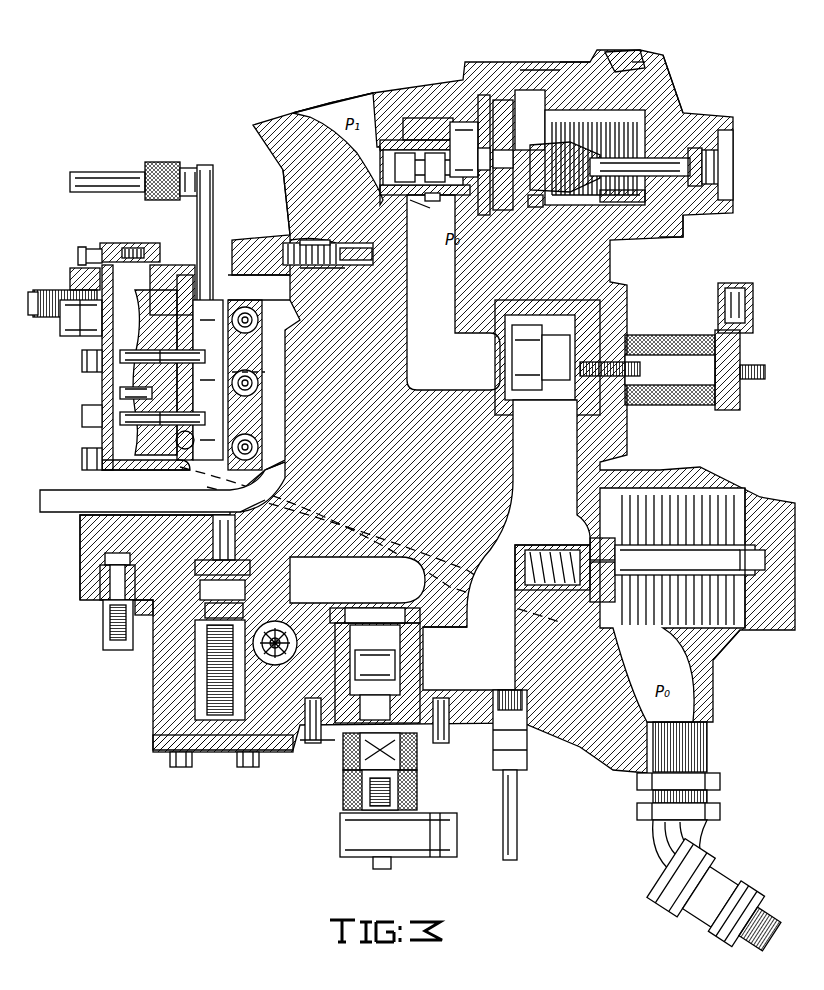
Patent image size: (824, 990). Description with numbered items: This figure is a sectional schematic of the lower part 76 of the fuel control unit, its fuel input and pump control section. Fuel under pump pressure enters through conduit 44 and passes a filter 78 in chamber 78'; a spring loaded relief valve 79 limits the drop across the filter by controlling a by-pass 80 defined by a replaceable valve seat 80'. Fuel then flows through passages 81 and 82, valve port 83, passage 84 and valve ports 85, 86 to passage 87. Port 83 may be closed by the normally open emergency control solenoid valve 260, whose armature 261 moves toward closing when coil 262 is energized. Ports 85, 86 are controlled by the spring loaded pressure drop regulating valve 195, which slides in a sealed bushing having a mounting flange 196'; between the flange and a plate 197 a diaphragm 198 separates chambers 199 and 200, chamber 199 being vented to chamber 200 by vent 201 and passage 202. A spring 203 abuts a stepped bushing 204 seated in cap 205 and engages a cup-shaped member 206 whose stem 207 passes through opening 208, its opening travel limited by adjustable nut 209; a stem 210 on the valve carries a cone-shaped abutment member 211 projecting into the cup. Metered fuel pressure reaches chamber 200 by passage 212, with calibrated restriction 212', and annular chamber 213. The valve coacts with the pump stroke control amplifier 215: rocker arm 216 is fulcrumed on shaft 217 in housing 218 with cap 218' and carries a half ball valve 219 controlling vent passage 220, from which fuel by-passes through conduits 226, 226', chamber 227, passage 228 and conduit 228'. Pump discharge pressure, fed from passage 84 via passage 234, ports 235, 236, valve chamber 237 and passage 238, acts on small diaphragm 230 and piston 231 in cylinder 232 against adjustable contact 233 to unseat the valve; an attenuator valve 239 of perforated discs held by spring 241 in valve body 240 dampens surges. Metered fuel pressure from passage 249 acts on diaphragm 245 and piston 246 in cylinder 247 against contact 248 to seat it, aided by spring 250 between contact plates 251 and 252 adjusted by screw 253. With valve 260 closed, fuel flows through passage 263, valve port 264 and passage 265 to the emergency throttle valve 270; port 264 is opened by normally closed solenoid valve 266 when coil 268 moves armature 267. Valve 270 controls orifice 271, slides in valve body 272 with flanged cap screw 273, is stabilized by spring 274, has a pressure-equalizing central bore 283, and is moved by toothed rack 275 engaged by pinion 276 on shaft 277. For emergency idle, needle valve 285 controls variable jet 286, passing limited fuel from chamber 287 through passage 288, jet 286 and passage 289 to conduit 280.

The fuel line or conduit 44 is at (775, 922).
The lower part of the unit 76 is at (330, 755).
The filter 78 is at (768, 578).
The chamber 78' is at (745, 664).
The spring loaded relief valve 79 is at (545, 582).
The by-pass 80 is at (591, 578).
The removable and replaceable valve seat 80' is at (690, 572).
The passage 81 is at (590, 550).
The passage 82 is at (533, 512).
The valve port 83 is at (512, 390).
The passage 84 is at (447, 366).
The valve port 85 is at (410, 205).
The valve port 86 is at (430, 198).
The passage 87 is at (322, 115).
The pressure drop regulating valve 195 is at (438, 118).
The mounting flange 196' is at (512, 123).
The plate 197 is at (540, 68).
The diaphragm 198 is at (535, 145).
The chamber 199 is at (485, 95).
The chamber 200 is at (530, 92).
The vent 201 is at (465, 122).
The passage 202 is at (575, 62).
The spring 203 is at (630, 158).
The stepped bushing 204 is at (695, 148).
The cap or cover 205 is at (733, 170).
The cup-shaped member 206 is at (588, 137).
The stem 207 is at (615, 200).
The opening 208 is at (685, 228).
The adjustable nut 209 is at (720, 158).
The stem 210 is at (533, 205).
The cone-shaped abutment member 211 is at (575, 197).
The passage 212 is at (625, 51).
The calibrated bleed or restriction 212' is at (657, 46).
The annular chamber 213 is at (650, 98).
The pump stroke control device or amplifier 215 is at (98, 385).
The rocker arm 216 is at (120, 418).
The shaft 217 is at (122, 393).
The housing 218 is at (134, 492).
The cap or cover 218' is at (77, 455).
The half ball valve 219 is at (127, 248).
The vent passage 220 is at (155, 268).
The conduit 226 is at (136, 168).
The conduit 226' is at (179, 235).
The chamber 227 is at (122, 352).
The passage 228 is at (162, 488).
The conduit 228' is at (537, 775).
The small diaphragm 230 is at (252, 312).
The piston 231 is at (275, 300).
The cylinder 232 is at (258, 380).
The adjustable contact 233 is at (83, 357).
The passage 234 is at (345, 256).
The valve port 235 is at (372, 258).
The valve port 236 is at (300, 240).
The valve chamber 237 is at (290, 240).
The passage 238 is at (285, 290).
The attenuator valve 239 is at (330, 262).
The valve body 240 is at (284, 250).
The spring 241 is at (340, 270).
The small diaphragm 245 is at (258, 440).
The piston 246 is at (252, 447).
The cylinder 247 is at (250, 455).
The adjustable contact 248 is at (175, 435).
The passage 249 is at (283, 185).
The spring 250 is at (90, 256).
The contact plate 251 is at (65, 320).
The contact plate 252 is at (75, 278).
The screw 253 is at (45, 297).
The emergency control solenoid valve 260 is at (560, 415).
The armature 261 is at (668, 385).
The coil 262 is at (668, 335).
The passage 263 is at (452, 659).
The valve port 264 is at (372, 610).
The passage 265 is at (327, 581).
The solenoid valve 266 is at (395, 675).
The armature 267 is at (418, 755).
The coil 268 is at (418, 792).
The emergency throttle valve 270 is at (245, 590).
The orifice or restriction 271 is at (236, 530).
The valve body 272 is at (243, 612).
The flanged cap screw 273 is at (222, 752).
The spring 274 is at (195, 698).
The toothed rack 275 is at (292, 640).
The gear or pinion 276 is at (288, 644).
The shaft 277 is at (280, 648).
The conduit 280 is at (75, 505).
The central bore or passage 283 is at (250, 567).
The needle valve 285 is at (105, 580).
The variable jet 286 is at (105, 558).
The chamber 287 is at (145, 612).
The passage 288 is at (122, 640).
The passage 289 is at (210, 488).